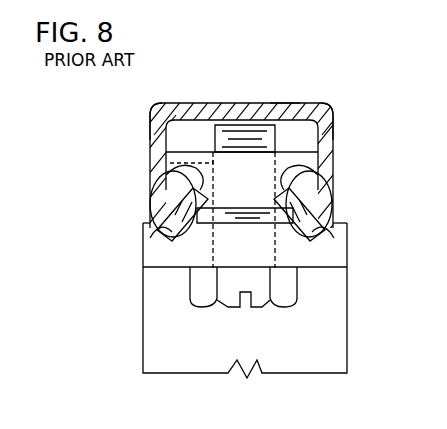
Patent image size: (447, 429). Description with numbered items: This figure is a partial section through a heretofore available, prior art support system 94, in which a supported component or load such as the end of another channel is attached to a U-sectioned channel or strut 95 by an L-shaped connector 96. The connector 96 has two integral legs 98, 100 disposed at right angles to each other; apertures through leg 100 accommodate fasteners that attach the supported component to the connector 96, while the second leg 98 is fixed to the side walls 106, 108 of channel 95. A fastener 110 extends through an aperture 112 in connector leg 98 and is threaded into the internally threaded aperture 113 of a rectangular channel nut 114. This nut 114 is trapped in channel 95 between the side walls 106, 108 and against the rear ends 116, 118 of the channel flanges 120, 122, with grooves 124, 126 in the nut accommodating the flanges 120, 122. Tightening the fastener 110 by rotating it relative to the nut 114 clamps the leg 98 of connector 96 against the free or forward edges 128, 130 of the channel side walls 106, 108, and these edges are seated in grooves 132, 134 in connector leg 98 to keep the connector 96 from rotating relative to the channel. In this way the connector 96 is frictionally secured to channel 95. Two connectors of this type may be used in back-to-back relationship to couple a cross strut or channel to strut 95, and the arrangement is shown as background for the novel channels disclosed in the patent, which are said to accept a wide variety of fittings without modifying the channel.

The support system 94 is at (244, 78).
The channel 95 is at (289, 96).
The connector 96 is at (132, 328).
The leg 98 is at (143, 264).
The leg 100 is at (233, 352).
The side wall 106 is at (149, 122).
The side wall 108 is at (333, 118).
The fastener 110 is at (282, 307).
The aperture 112 is at (275, 270).
The internally threaded aperture 113 is at (158, 156).
The channel nut 114 is at (312, 156).
The rear end 116 is at (158, 166).
The rear end 118 is at (298, 180).
The channel flange 120 is at (197, 235).
The channel flange 122 is at (287, 235).
The groove 124 is at (170, 190).
The groove 126 is at (322, 200).
The forward edge 128 is at (143, 243).
The forward edge 130 is at (333, 237).
The groove 132 is at (160, 216).
The groove 134 is at (336, 222).